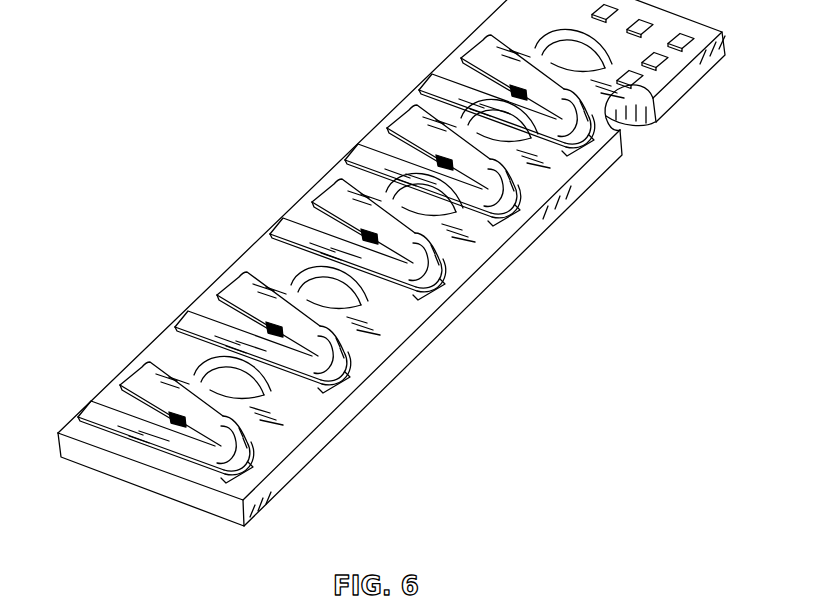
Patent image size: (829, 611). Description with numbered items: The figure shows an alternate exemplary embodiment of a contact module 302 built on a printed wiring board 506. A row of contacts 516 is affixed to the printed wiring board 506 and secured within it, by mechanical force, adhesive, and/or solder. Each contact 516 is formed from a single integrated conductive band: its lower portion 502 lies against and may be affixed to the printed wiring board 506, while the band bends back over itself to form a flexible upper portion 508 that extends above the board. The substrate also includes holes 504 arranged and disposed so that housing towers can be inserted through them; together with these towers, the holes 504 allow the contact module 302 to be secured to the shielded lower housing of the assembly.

The contact module 302 is at (388, 263).
The lower portion 502 is at (295, 230).
The holes 504 is at (293, 277).
The printed wiring board 506 is at (281, 431).
The flexible upper portion 508 is at (340, 197).
The contacts 516 is at (105, 413).